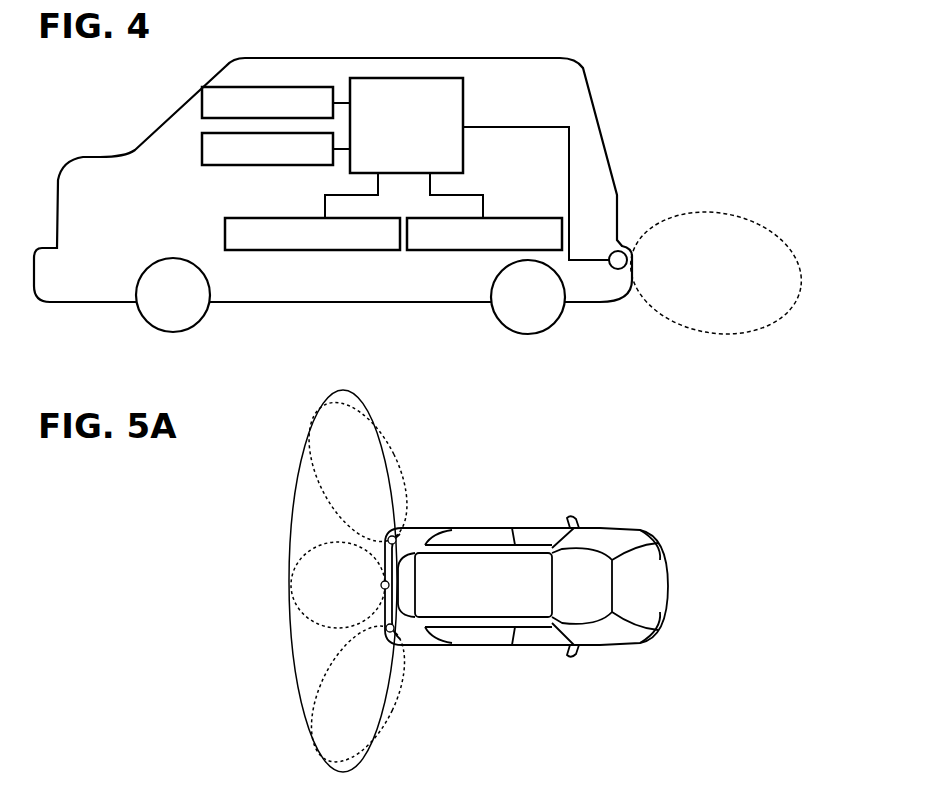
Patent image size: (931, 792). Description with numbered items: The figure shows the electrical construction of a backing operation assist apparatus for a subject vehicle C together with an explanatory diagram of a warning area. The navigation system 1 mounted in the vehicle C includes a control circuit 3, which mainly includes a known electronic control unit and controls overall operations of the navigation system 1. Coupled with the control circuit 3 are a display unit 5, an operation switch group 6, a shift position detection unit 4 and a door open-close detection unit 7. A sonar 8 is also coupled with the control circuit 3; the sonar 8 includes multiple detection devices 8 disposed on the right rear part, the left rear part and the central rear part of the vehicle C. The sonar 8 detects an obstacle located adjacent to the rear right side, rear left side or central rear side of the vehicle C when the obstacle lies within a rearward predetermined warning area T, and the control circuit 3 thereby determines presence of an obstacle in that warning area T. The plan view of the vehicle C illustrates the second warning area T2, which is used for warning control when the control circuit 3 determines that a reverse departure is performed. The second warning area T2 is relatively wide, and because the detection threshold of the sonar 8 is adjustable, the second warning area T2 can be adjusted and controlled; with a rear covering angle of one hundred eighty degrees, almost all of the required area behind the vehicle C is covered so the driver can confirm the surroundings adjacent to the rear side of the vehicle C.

In FIG. 4, the navigation system 1 is at (343, 68).
In FIG. 4, the subject vehicle C is at (407, 58).
In FIG. 5A, the subject vehicle C is at (535, 528).
In FIG. 4, the control circuit 3 is at (465, 87).
In FIG. 4, the shift position detection unit 4 is at (284, 218).
In FIG. 4, the display unit 5 is at (267, 86).
In FIG. 4, the operation switch group 6 is at (222, 166).
In FIG. 4, the door open-close detection unit 7 is at (519, 218).
In FIG. 4, the sonar 8 is at (609, 254).
In FIG. 5A, the sonar 8 is at (393, 535).
In FIG. 4, the rearward predetermined warning area T is at (760, 223).
In FIG. 5A, the second warning area T2 is at (293, 513).